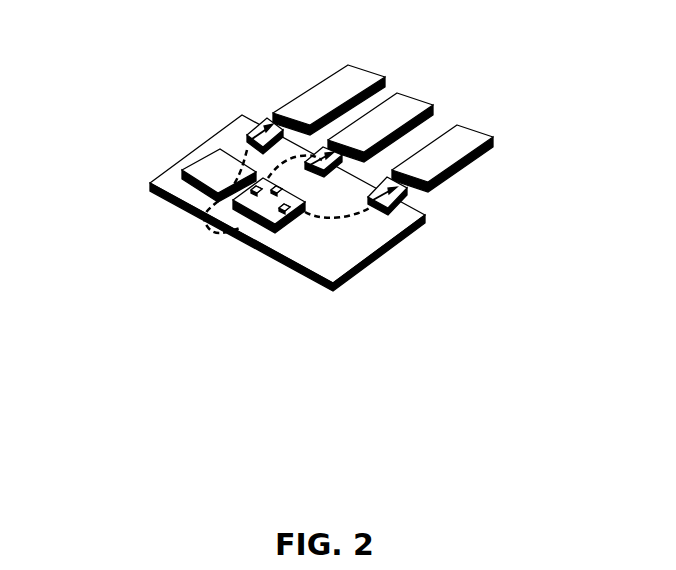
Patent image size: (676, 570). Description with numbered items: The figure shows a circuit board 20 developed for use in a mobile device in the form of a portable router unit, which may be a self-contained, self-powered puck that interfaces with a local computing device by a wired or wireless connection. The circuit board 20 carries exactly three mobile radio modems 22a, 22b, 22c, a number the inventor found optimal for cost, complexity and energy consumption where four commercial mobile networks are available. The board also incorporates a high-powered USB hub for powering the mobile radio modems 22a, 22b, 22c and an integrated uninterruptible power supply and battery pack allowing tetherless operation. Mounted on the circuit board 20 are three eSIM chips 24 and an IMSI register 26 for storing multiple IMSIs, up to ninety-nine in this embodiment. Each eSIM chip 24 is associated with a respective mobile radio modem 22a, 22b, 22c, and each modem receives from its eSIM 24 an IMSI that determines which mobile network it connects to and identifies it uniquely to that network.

The circuit board 20 is at (405, 260).
The mobile radio modem 22a is at (352, 64).
The mobile radio modem 22b is at (425, 97).
The mobile radio modem 22c is at (490, 124).
The eSIM chip 24 is at (210, 175).
The IMSI register 26 is at (262, 207).